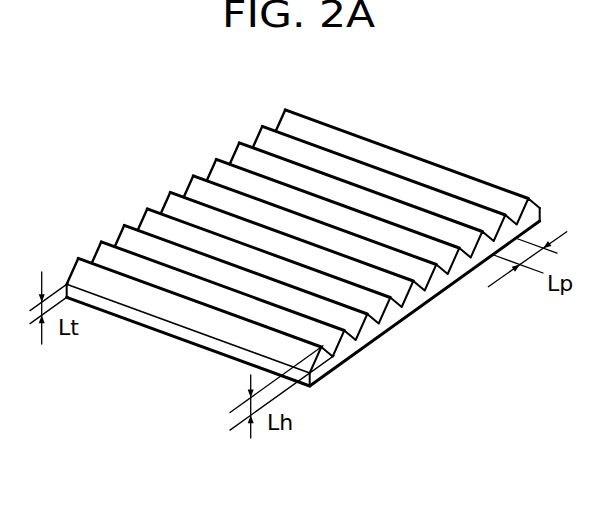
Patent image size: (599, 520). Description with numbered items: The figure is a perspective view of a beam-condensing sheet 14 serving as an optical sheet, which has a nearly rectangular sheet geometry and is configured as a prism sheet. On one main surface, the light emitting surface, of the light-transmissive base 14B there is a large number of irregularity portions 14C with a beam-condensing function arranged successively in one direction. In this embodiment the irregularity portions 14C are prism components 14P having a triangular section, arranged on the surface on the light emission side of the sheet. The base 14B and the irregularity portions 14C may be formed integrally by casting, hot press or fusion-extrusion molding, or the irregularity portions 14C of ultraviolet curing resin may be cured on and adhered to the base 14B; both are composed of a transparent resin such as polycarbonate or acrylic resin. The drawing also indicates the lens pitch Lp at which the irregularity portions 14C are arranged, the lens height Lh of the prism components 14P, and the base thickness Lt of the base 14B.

The beam-condensing sheet 14 is at (136, 198).
The irregularity portions 14C is at (468, 177).
The prism component 14P is at (418, 154).
The base 14B is at (421, 303).